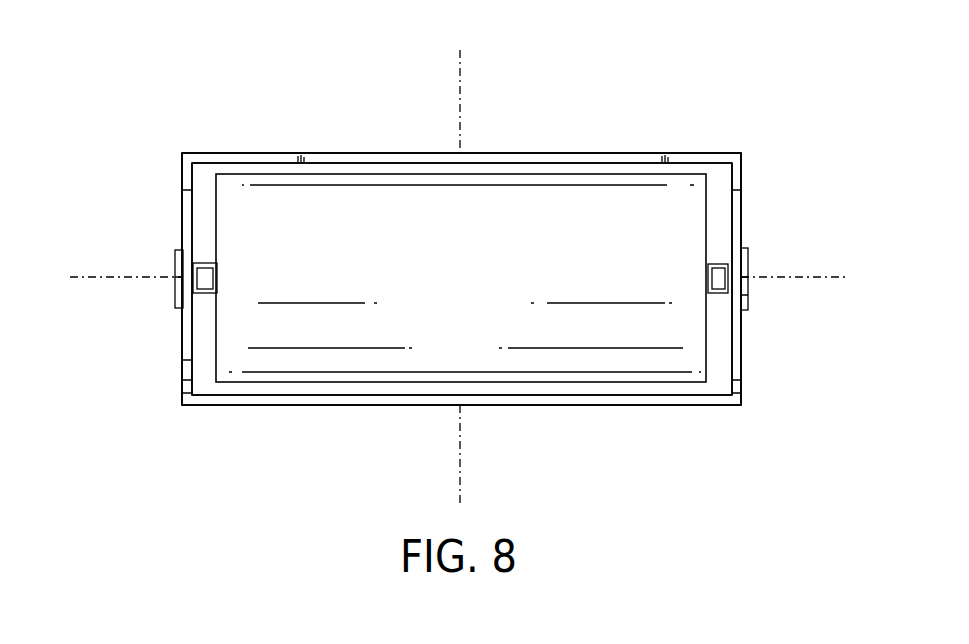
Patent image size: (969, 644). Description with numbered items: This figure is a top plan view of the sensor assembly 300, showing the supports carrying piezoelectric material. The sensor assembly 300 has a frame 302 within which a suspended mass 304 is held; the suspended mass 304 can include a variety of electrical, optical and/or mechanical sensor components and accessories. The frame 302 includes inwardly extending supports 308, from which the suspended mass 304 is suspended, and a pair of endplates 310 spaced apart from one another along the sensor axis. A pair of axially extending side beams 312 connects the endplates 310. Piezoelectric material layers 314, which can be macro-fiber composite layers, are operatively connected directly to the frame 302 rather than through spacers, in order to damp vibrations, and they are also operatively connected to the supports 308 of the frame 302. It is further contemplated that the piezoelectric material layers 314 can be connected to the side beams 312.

The sensor assembly 300 is at (160, 110).
The frame 302 is at (750, 150).
The suspended mass 304 is at (400, 216).
The supports 308 is at (207, 281).
The endplates 310 is at (184, 347).
The side beams 312 is at (650, 153).
The piezoelectric material layer 314 is at (177, 262).